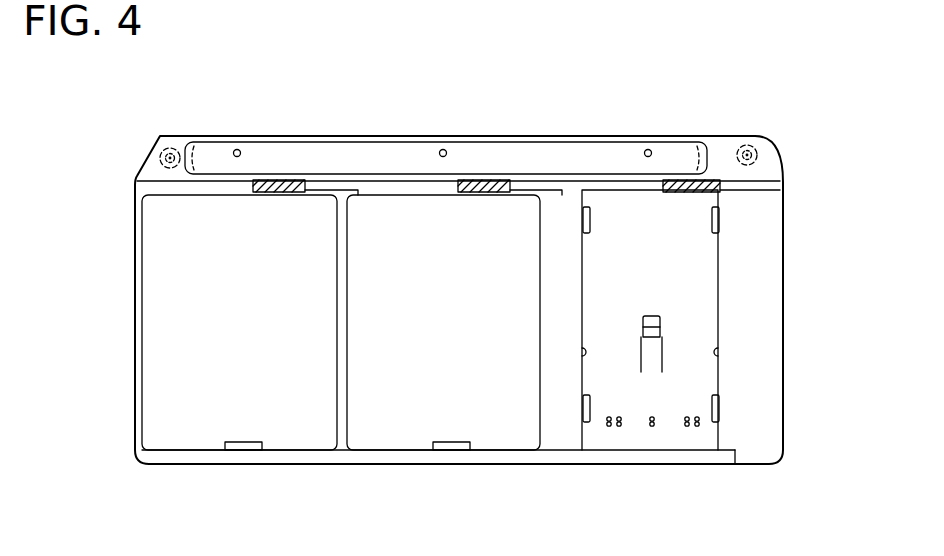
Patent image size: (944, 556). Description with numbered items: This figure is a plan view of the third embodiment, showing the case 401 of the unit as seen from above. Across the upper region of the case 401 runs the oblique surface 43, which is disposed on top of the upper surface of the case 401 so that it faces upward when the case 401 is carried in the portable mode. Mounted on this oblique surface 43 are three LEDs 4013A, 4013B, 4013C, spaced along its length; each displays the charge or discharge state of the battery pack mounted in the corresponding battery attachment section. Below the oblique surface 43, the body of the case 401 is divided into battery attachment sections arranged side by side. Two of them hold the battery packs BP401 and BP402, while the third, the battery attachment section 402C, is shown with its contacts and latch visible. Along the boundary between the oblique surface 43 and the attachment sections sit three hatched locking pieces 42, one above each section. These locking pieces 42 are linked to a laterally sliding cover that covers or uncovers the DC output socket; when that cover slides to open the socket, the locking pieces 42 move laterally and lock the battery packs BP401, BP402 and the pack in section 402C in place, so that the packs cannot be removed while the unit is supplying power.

The case 401 is at (765, 278).
The locking pieces 42 is at (283, 180).
The oblique surface 43 is at (724, 140).
The LED 4013A is at (240, 149).
The LED 4013B is at (441, 149).
The LED 4013C is at (646, 149).
The battery pack BP401 is at (208, 440).
The battery pack BP402 is at (408, 440).
The battery attachment section 402C is at (637, 435).